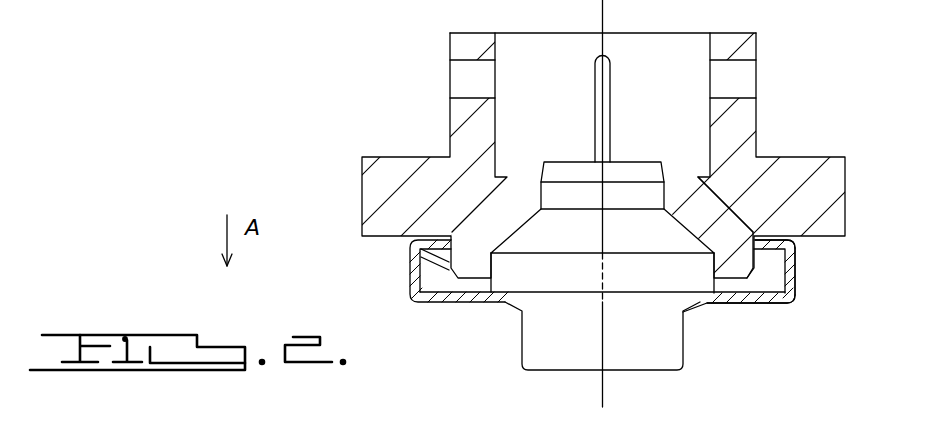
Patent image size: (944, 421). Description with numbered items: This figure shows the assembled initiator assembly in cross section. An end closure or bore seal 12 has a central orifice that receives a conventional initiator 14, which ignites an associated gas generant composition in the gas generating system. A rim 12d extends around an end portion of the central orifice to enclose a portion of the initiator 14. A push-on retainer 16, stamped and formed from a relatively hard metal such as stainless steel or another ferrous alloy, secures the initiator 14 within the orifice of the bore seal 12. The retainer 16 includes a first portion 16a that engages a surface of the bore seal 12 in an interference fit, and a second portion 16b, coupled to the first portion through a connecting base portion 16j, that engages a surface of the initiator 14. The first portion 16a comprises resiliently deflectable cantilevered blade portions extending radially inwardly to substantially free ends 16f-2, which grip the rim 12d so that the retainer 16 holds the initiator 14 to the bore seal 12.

The bore seal 12 is at (403, 152).
The rim 12d is at (742, 260).
The initiator 14 is at (513, 274).
The push-on retainer 16 is at (800, 262).
The first portion 16a is at (757, 236).
The second portion 16b is at (741, 306).
The free end 16f-2 is at (413, 255).
The connecting base portion 16j is at (792, 280).